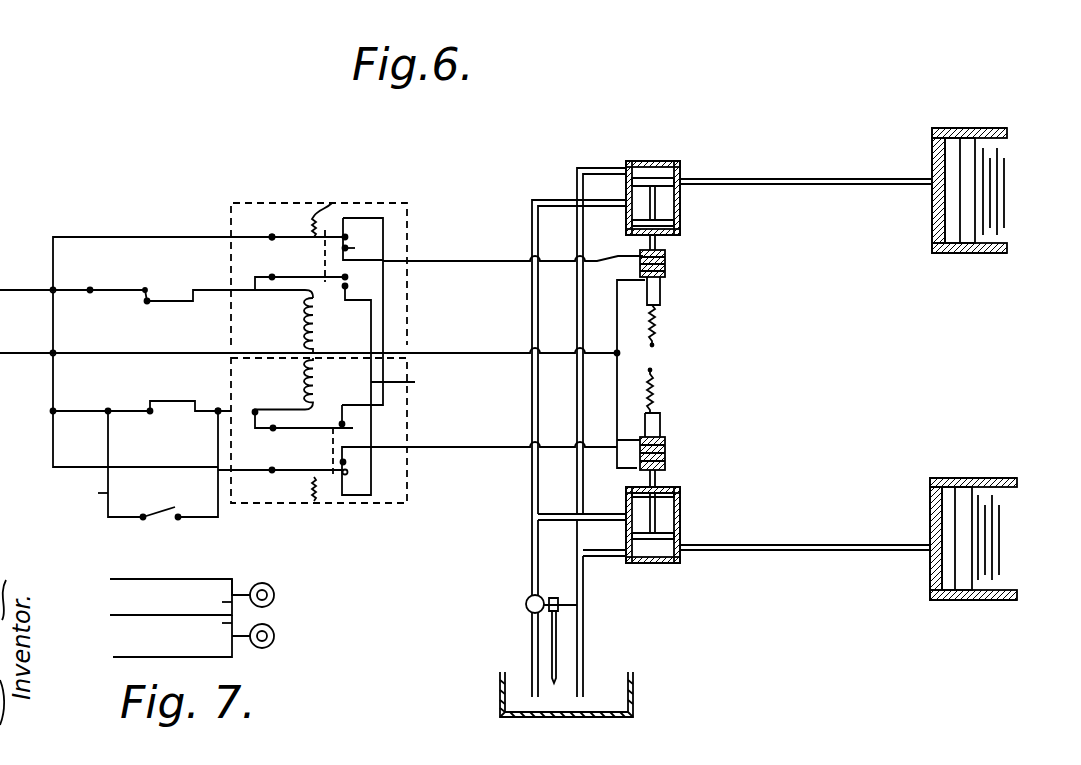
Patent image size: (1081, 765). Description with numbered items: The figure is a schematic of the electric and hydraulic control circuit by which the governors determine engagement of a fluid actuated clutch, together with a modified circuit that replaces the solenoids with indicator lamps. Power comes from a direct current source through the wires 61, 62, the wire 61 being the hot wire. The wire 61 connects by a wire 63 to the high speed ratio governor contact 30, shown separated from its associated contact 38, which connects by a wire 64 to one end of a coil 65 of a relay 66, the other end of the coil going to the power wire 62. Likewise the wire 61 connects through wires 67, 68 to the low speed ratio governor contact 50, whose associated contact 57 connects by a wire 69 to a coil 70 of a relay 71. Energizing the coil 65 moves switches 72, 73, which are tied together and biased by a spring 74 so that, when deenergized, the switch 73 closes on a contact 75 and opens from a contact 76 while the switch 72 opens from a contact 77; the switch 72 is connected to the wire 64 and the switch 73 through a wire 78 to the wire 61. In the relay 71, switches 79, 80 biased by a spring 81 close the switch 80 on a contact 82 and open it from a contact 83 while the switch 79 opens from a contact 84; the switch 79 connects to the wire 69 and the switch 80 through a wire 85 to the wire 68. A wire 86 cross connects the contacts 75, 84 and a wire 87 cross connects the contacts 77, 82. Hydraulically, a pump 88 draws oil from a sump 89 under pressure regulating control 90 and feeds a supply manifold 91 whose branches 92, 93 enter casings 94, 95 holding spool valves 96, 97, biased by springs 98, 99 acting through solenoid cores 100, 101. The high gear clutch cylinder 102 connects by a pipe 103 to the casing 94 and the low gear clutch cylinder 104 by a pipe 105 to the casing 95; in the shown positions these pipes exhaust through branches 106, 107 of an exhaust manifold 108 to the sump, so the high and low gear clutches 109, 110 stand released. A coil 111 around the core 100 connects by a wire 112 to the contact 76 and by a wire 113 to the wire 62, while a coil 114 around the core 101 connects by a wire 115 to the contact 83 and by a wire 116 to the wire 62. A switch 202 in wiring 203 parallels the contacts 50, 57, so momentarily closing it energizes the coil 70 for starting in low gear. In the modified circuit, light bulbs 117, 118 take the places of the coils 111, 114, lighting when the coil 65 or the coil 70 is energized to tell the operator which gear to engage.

In FIG. 6, the high speed ratio governor contact 30 is at (150, 282).
In FIG. 6, the contact 38 is at (145, 304).
In FIG. 6, the low speed ratio governor contact 50 is at (146, 414).
In FIG. 6, the contact 57 is at (150, 400).
In FIG. 6, the wire 61 is at (10, 289).
In FIG. 6, the wire 62 is at (30, 351).
In FIG. 7, the wire 62 is at (152, 614).
In FIG. 6, the wire 63 is at (73, 289).
In FIG. 6, the wire 64 is at (197, 290).
In FIG. 6, the coil 65 is at (306, 301).
In FIG. 6, the relay 66 is at (245, 200).
In FIG. 6, the wire 67 is at (52, 316).
In FIG. 6, the wire 68 is at (70, 415).
In FIG. 6, the wire 69 is at (212, 414).
In FIG. 6, the coil 70 is at (306, 384).
In FIG. 6, the relay 71 is at (292, 504).
In FIG. 6, the switch 72 is at (289, 276).
In FIG. 6, the switch 73 is at (287, 236).
In FIG. 6, the spring 74 is at (331, 206).
In FIG. 6, the contact 75 is at (363, 238).
In FIG. 6, the contact 76 is at (361, 248).
In FIG. 6, the contact 77 is at (362, 353).
In FIG. 6, the wire 78 is at (134, 237).
In FIG. 6, the switch 79 is at (303, 430).
In FIG. 6, the switch 80 is at (295, 472).
In FIG. 6, the spring 81 is at (311, 484).
In FIG. 6, the contact 82 is at (348, 474).
In FIG. 6, the contact 83 is at (346, 462).
In FIG. 6, the contact 84 is at (346, 424).
In FIG. 6, the wire 85 is at (136, 469).
In FIG. 6, the wire 86 is at (407, 300).
In FIG. 6, the wire 87 is at (405, 382).
In FIG. 6, the pump 88 is at (525, 605).
In FIG. 6, the sump 89 is at (499, 690).
In FIG. 6, the pressure regulating control 90 is at (585, 607).
In FIG. 6, the supply manifold 91 is at (531, 540).
In FIG. 6, the branch 92 is at (555, 199).
In FIG. 6, the branch 93 is at (553, 513).
In FIG. 6, the casing 94 is at (681, 222).
In FIG. 6, the casing 95 is at (681, 525).
In FIG. 6, the spool valve 96 is at (681, 198).
In FIG. 6, the spool valve 97 is at (667, 509).
In FIG. 6, the spring 98 is at (658, 328).
In FIG. 6, the spring 99 is at (656, 396).
In FIG. 6, the solenoid core 100 is at (661, 297).
In FIG. 6, the solenoid core 101 is at (661, 431).
In FIG. 6, the high gear clutch cylinder 102 is at (931, 134).
In FIG. 6, the pipe 103 is at (850, 178).
In FIG. 6, the low gear clutch cylinder 104 is at (930, 597).
In FIG. 6, the pipe 105 is at (842, 551).
In FIG. 6, the branch 106 is at (604, 166).
In FIG. 6, the branch 107 is at (601, 558).
In FIG. 6, the exhaust manifold 108 is at (584, 637).
In FIG. 6, the high gear clutch 109 is at (1005, 148).
In FIG. 6, the low gear clutch 110 is at (1000, 497).
In FIG. 6, the coil 111 is at (667, 257).
In FIG. 6, the wire 112 is at (469, 260).
In FIG. 7, the wire 112 is at (164, 578).
In FIG. 6, the wire 113 is at (616, 318).
In FIG. 7, the wire 113 is at (205, 601).
In FIG. 6, the coil 114 is at (667, 460).
In FIG. 6, the wire 115 is at (486, 449).
In FIG. 7, the wire 115 is at (162, 656).
In FIG. 6, the wire 116 is at (615, 386).
In FIG. 7, the wire 116 is at (205, 624).
In FIG. 7, the light bulb 117 is at (270, 586).
In FIG. 7, the light bulb 118 is at (275, 636).
In FIG. 6, the switch 202 is at (150, 522).
In FIG. 6, the wiring 203 is at (79, 494).